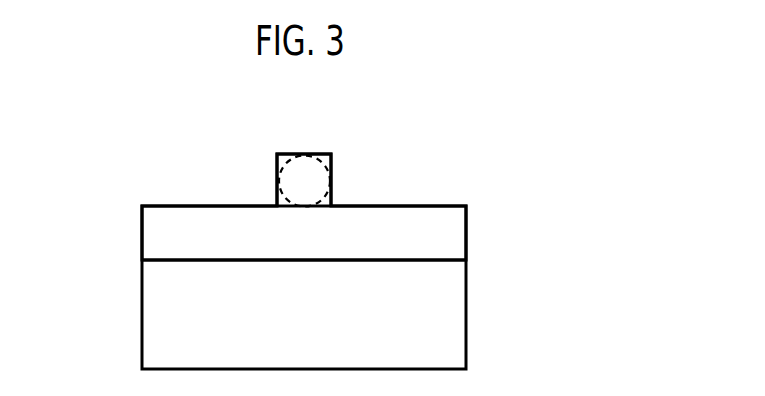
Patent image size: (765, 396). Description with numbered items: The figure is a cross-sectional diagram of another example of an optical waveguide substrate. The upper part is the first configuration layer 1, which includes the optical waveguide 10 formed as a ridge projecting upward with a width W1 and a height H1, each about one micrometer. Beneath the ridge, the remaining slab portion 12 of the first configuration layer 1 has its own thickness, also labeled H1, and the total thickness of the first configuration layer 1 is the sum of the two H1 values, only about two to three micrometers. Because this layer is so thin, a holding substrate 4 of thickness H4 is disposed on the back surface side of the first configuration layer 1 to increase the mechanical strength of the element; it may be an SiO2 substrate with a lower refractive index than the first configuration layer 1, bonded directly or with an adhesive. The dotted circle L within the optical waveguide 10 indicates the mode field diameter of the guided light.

The first configuration layer 1 is at (304, 261).
The holding substrate 4 is at (447, 330).
The optical waveguide 10 is at (330, 159).
The first configuration layer portion below the waveguide 12 is at (445, 235).
The dotted line indicating the mode field diameter L is at (322, 201).
The width of the optical waveguide W1 is at (331, 154).
The height of the optical waveguide H1 is at (277, 154).
The thickness of the holding substrate H4 is at (142, 369).